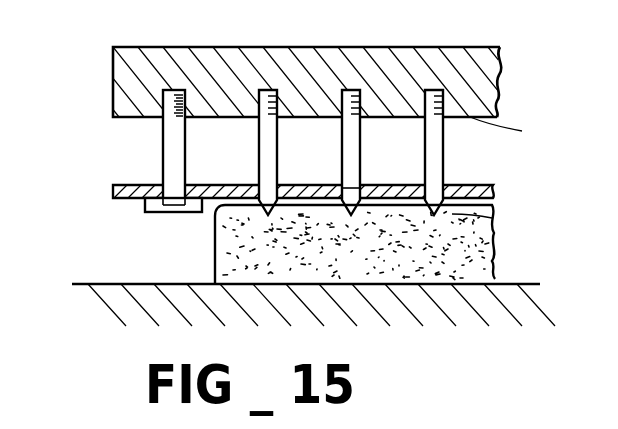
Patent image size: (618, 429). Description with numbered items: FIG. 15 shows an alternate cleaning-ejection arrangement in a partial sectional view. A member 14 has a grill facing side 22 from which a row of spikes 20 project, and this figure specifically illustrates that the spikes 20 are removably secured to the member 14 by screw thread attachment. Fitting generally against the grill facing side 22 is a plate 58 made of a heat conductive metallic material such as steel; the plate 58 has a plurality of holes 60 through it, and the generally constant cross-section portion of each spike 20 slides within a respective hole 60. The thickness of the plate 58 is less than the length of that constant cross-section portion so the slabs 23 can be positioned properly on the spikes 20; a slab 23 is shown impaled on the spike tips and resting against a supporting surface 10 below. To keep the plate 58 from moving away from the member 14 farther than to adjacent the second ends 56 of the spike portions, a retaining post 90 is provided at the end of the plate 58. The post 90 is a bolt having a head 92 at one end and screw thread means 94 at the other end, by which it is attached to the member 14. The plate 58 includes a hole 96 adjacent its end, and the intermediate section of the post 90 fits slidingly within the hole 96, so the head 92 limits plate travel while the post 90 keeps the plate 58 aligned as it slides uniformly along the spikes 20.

The ground / base surface 10 is at (515, 284).
The member 14 is at (360, 50).
The spikes 20 is at (340, 165).
The grill facing side 22 is at (516, 132).
The slabs 23 is at (215, 256).
The second ends 56 is at (492, 218).
The plate 58 is at (112, 190).
The holes 60 is at (358, 185).
The retaining posts 90 is at (163, 150).
The head 92 is at (158, 214).
The screw thread means 94 is at (167, 100).
The holes 96 is at (171, 200).